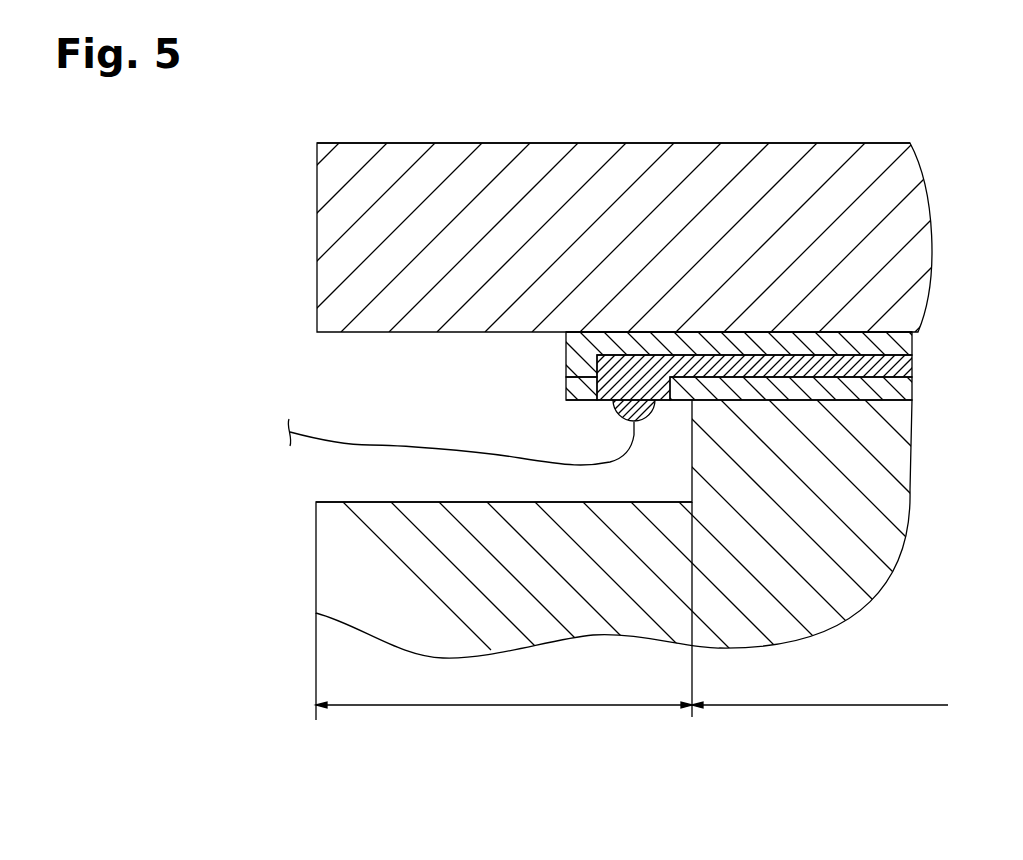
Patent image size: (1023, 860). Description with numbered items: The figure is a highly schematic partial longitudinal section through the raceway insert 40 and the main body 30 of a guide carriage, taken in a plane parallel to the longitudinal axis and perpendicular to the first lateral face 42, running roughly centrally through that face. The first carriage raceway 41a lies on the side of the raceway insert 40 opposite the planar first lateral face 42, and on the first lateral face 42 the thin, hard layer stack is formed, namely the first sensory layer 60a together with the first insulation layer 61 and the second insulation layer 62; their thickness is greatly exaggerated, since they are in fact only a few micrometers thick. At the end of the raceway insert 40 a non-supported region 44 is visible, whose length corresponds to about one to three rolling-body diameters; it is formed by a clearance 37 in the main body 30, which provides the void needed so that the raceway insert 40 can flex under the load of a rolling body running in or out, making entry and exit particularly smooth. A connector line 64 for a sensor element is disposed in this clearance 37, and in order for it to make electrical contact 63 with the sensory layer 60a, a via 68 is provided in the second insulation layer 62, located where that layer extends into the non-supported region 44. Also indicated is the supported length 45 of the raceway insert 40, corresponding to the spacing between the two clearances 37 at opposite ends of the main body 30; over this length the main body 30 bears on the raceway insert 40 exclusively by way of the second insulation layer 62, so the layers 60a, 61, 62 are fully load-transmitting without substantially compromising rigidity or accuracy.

The main body 30 is at (880, 548).
The clearance 37 is at (374, 500).
The raceway insert 40 is at (918, 245).
The first carriage raceway 41a is at (835, 142).
The first lateral face 42 is at (885, 385).
The non-supported region 44 is at (505, 705).
The supported length 45 is at (813, 705).
The first sensory layer 60a is at (905, 368).
The first insulation layer 61 is at (905, 344).
The second insulation layer 62 is at (895, 393).
The electrical contact 63 is at (618, 417).
The connector line 64 is at (373, 440).
The via 68 is at (604, 400).